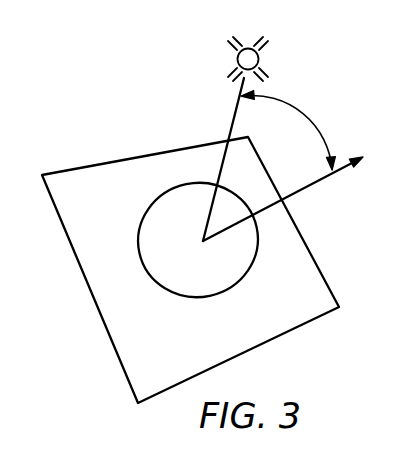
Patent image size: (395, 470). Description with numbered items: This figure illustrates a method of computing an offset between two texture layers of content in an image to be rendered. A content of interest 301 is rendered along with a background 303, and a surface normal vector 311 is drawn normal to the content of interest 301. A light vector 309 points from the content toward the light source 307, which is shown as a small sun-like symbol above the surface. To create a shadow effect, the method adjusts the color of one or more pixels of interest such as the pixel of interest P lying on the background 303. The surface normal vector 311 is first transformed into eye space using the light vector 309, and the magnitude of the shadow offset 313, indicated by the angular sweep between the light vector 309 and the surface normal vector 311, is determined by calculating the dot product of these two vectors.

The content of interest 301 is at (170, 218).
The background 303 is at (210, 270).
The light source 307 is at (226, 42).
The light vector 309 is at (232, 120).
The surface normal vector 311 is at (307, 188).
The shadow offset 313 is at (307, 117).
The pixel of interest P is at (342, 265).